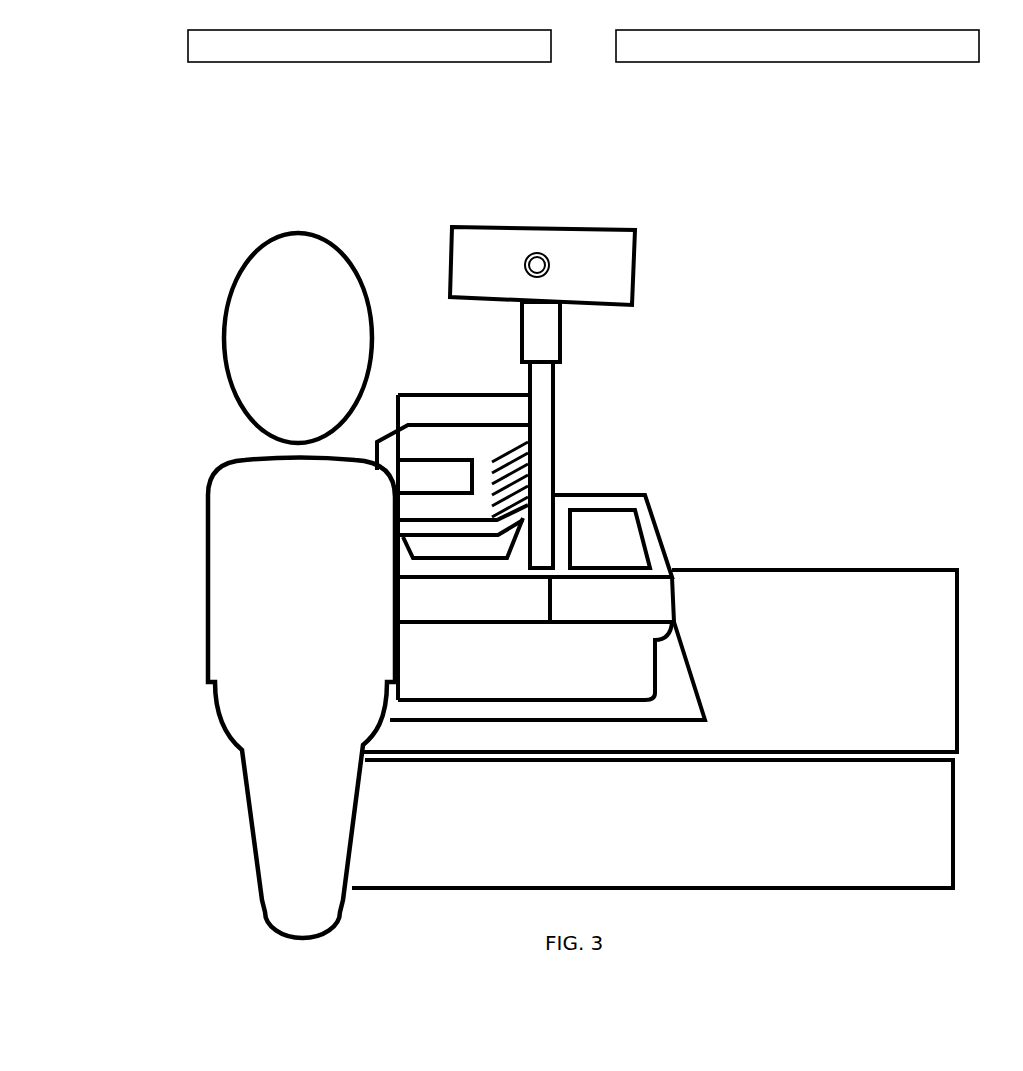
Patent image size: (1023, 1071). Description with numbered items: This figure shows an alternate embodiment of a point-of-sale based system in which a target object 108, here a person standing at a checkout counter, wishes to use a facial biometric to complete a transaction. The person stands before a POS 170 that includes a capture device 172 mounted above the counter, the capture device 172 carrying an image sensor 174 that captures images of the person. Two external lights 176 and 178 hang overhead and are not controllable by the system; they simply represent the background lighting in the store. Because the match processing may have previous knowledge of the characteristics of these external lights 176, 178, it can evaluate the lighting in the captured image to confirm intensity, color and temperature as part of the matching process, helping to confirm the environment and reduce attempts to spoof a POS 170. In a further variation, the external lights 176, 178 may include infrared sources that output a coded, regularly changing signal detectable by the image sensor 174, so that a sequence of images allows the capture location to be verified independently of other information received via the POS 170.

The target object 108 is at (258, 247).
The POS 170 is at (633, 498).
The capture device 172 is at (603, 307).
The image sensor 174 is at (535, 253).
The external light 176 is at (247, 63).
The external light 178 is at (890, 63).